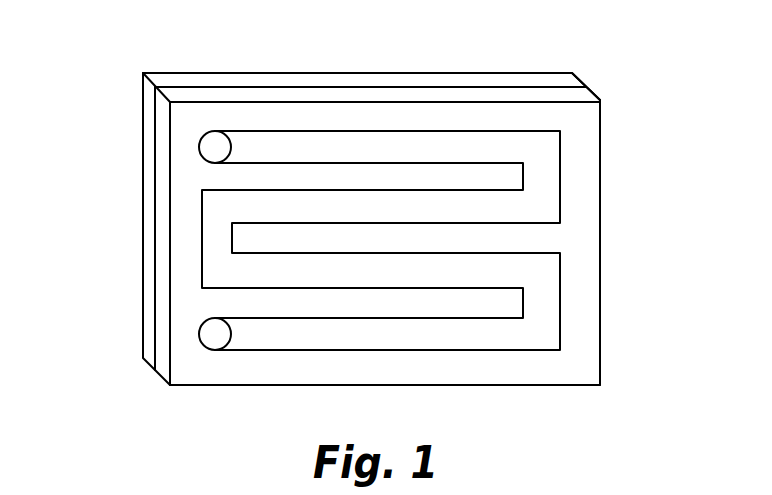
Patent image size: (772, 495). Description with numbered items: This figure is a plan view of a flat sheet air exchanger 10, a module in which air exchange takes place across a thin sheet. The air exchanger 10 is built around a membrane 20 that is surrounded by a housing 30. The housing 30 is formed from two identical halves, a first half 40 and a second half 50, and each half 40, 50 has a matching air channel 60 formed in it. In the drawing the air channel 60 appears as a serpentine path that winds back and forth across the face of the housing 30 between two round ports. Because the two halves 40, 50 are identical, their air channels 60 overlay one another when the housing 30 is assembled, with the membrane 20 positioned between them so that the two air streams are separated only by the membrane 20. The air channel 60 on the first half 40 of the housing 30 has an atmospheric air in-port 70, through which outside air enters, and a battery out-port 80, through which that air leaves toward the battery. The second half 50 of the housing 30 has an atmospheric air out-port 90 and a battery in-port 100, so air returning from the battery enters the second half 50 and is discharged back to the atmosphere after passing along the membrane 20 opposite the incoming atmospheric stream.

The flat sheet air exchanger 10 is at (648, 232).
The membrane 20 is at (467, 86).
The housing 30 is at (601, 336).
The first half 40 is at (557, 73).
The second half 50 is at (573, 95).
The air channel 60 is at (545, 178).
The atmospheric air in-port 70 is at (134, 113).
The battery out-port 80 is at (143, 307).
The atmospheric air out-port 90 is at (215, 147).
The battery in-port 100 is at (209, 337).